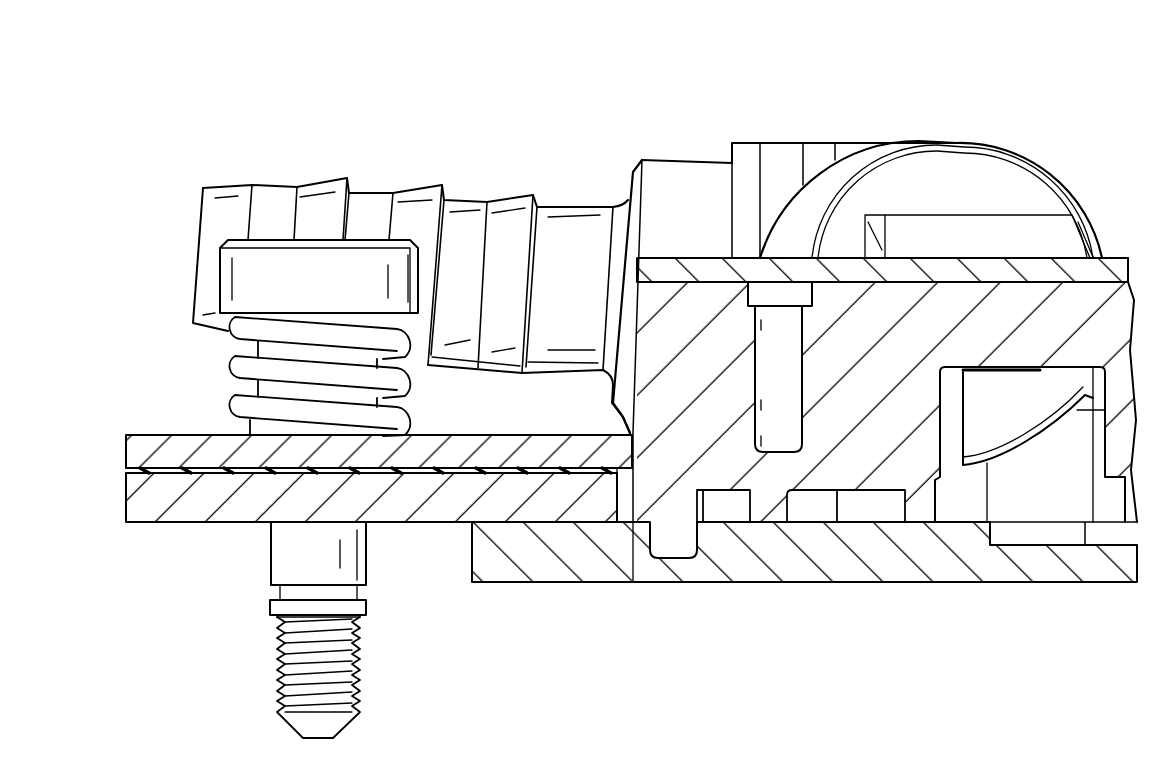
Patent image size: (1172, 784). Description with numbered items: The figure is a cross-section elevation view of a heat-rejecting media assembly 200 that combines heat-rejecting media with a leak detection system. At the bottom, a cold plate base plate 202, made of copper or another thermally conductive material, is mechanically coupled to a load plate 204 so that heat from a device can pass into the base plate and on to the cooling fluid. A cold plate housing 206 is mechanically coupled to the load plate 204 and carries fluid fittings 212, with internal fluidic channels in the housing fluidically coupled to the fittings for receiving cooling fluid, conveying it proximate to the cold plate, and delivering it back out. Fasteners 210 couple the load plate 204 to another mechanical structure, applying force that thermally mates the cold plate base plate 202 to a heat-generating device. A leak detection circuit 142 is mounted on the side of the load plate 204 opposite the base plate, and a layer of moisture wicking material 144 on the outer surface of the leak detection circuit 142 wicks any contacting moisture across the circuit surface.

The heat-rejecting media assembly 200 is at (953, 83).
The cold plate base plate 202 is at (797, 573).
The load plate 204 is at (188, 515).
The cold plate housing 206 is at (660, 398).
The fasteners 210 is at (367, 556).
The fluid fittings 212 is at (512, 200).
The leak detection circuit 142 is at (160, 471).
The moisture wicking material 144 is at (133, 452).